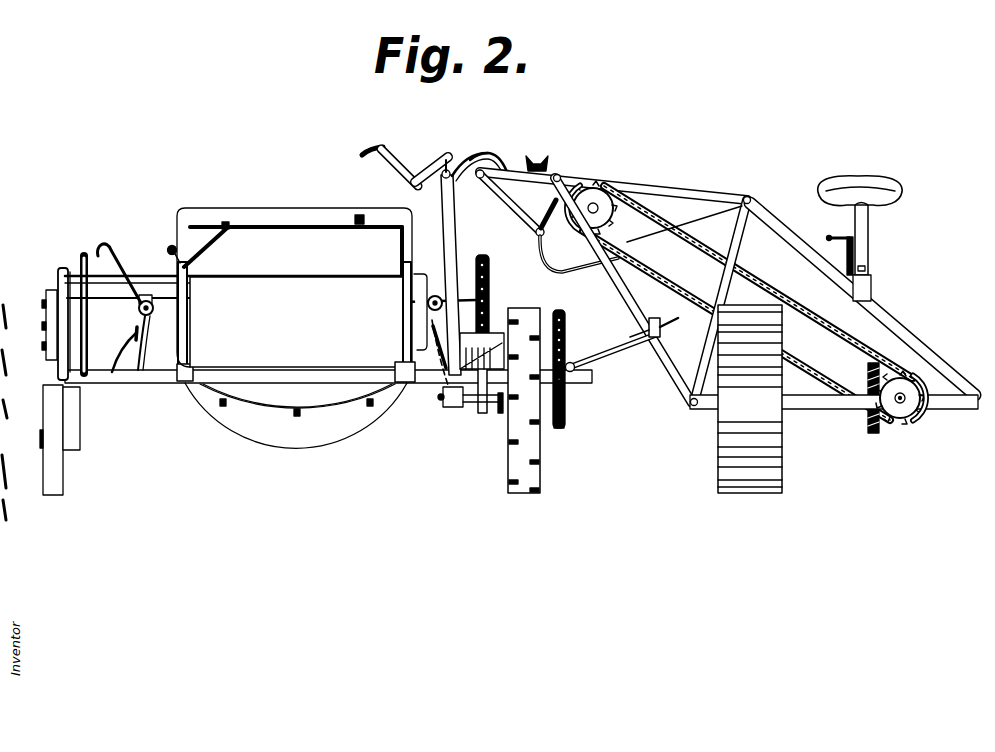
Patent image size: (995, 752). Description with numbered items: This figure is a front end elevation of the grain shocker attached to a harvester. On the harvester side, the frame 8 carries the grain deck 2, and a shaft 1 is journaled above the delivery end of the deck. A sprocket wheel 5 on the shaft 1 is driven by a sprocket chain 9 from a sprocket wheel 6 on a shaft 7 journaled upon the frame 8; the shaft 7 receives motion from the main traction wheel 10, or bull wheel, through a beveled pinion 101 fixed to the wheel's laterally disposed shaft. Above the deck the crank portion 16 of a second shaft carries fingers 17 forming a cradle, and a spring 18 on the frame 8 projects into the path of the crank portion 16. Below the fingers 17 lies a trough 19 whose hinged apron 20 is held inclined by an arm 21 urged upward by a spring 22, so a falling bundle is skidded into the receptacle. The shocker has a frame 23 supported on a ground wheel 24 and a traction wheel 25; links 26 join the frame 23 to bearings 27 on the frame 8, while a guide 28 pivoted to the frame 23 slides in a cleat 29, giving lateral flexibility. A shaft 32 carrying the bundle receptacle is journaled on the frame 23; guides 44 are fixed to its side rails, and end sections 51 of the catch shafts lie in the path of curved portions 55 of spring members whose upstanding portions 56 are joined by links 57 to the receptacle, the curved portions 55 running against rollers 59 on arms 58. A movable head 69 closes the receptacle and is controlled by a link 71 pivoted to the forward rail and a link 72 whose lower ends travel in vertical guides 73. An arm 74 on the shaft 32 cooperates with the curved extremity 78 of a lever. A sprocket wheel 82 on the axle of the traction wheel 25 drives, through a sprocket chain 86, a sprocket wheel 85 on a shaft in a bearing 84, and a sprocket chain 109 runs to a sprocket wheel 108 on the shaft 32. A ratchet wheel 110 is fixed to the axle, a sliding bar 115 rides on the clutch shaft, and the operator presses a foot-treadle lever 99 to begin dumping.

The shaft 1 is at (600, 205).
The grain deck 2 is at (700, 225).
The sprocket wheel 5 is at (590, 190).
The sprocket wheel 6 is at (910, 420).
The shaft 7 is at (903, 393).
The frame 8 is at (962, 404).
The sprocket chain 9 is at (837, 385).
The main traction wheel 10 is at (735, 474).
The beveled pinion 101 is at (867, 436).
The crank portion 16 is at (504, 207).
The fingers 17 is at (547, 221).
The spring 18 is at (490, 153).
The trough 19 is at (433, 166).
The hinged apron 20 is at (387, 146).
The arm 21 is at (403, 175).
The spring 22 is at (457, 165).
The frame 23 is at (429, 381).
The ground wheel 24 is at (68, 468).
The traction wheel 25 is at (543, 467).
The links 26 is at (537, 152).
The bearings 27 is at (552, 162).
The guide 28 is at (617, 357).
The cleat 29 is at (649, 330).
The shaft 32 is at (113, 301).
The guides 44 is at (80, 262).
The end sections of catch shafts 51 is at (131, 340).
The curved end portions 55 is at (104, 262).
The upstanding portions 56 is at (175, 248).
The links 57 is at (200, 246).
The arms 58 is at (160, 343).
The rollers 59 is at (154, 309).
The movable head 69 is at (296, 322).
The link or shaft 71 is at (326, 278).
The link or shaft 72 is at (148, 280).
The guides 73 is at (403, 352).
The arm 74 is at (47, 336).
The curved extremity 78 is at (56, 372).
The sprocket wheel 82 is at (566, 429).
The bearing 84 is at (438, 385).
The sprocket wheel 85 is at (572, 306).
The sprocket chain 86 is at (566, 367).
The foot-treadle lever 99 is at (829, 237).
The sprocket wheel 108 is at (472, 249).
The sprocket chain 109 is at (492, 306).
The ratchet wheel 110 is at (501, 418).
The bar 115 is at (493, 407).